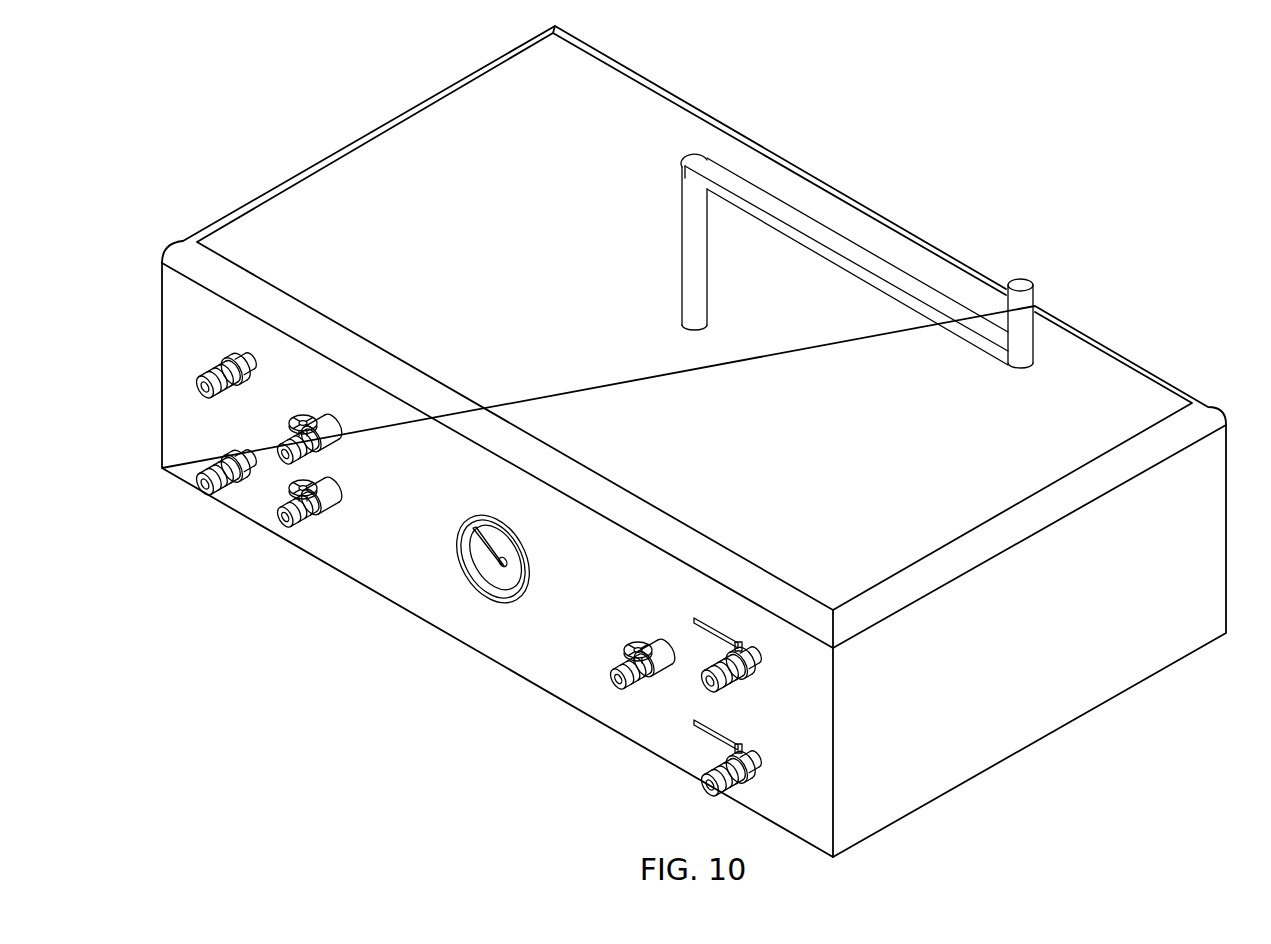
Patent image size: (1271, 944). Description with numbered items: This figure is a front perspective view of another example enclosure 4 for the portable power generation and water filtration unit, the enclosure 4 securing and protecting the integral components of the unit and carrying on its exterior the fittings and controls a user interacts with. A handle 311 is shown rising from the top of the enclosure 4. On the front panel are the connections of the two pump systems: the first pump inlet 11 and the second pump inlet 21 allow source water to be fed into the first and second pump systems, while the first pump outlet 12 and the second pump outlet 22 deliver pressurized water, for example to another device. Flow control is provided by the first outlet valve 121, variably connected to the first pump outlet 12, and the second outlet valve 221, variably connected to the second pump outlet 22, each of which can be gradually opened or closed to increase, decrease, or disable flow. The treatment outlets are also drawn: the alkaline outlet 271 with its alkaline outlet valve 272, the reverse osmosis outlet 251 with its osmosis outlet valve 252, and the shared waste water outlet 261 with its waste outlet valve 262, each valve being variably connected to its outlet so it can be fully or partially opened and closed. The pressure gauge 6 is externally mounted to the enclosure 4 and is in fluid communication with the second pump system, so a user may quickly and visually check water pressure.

The enclosure 4 is at (1074, 120).
The handle 311 is at (960, 318).
The first pump inlet 11 is at (201, 396).
The second pump inlet 21 is at (201, 500).
The first pump outlet 12 is at (695, 683).
The second pump outlet 22 is at (695, 780).
The first outlet valve 121 is at (697, 622).
The second outlet valve 221 is at (722, 735).
The alkaline outlet 271 is at (320, 451).
The alkaline outlet valve 272 is at (298, 416).
The reverse osmosis outlet 251 is at (284, 528).
The osmosis outlet valve 252 is at (313, 503).
The waste outlet valve 262 is at (625, 692).
The waste water outlet 261 is at (628, 643).
The pressure gauge 6 is at (467, 523).